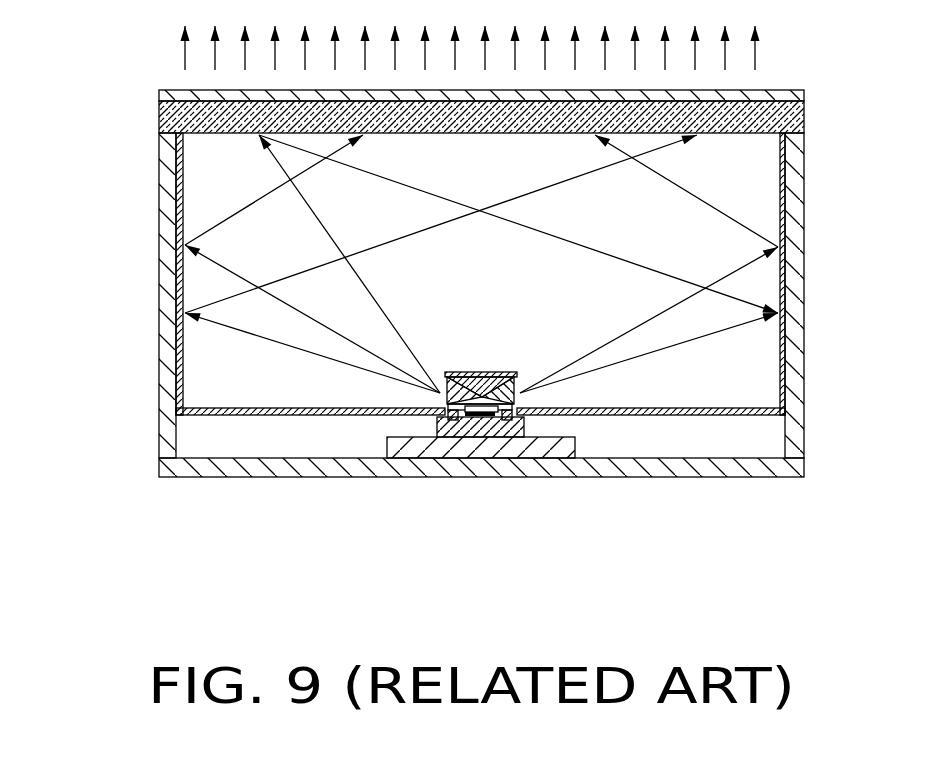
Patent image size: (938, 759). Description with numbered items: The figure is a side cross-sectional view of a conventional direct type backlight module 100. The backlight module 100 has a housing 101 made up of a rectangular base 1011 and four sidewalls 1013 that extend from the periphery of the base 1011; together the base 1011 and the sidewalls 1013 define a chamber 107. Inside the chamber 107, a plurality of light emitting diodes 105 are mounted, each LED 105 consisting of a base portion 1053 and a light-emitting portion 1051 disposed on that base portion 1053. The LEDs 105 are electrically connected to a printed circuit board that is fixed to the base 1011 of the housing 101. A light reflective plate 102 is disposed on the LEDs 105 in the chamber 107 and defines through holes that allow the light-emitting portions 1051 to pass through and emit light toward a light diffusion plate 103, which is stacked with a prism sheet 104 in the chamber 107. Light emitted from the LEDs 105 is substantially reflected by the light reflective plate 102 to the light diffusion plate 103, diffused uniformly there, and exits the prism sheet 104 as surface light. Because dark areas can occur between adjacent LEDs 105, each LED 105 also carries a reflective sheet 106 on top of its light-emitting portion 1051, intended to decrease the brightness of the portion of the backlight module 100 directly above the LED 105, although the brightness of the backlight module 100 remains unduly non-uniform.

The backlight module 100 is at (134, 52).
The housing 101 is at (67, 340).
The base 1011 is at (209, 467).
The sidewalls 1013 is at (167, 350).
The light reflective plate 102 is at (707, 407).
The light diffusion plate 103 is at (800, 113).
The prism sheet 104 is at (767, 90).
The light emitting diode 105 is at (503, 552).
The light-emitting portion 1051 is at (453, 430).
The base portion 1053 is at (470, 420).
The reflective sheet 106 is at (469, 372).
The chamber 107 is at (745, 197).